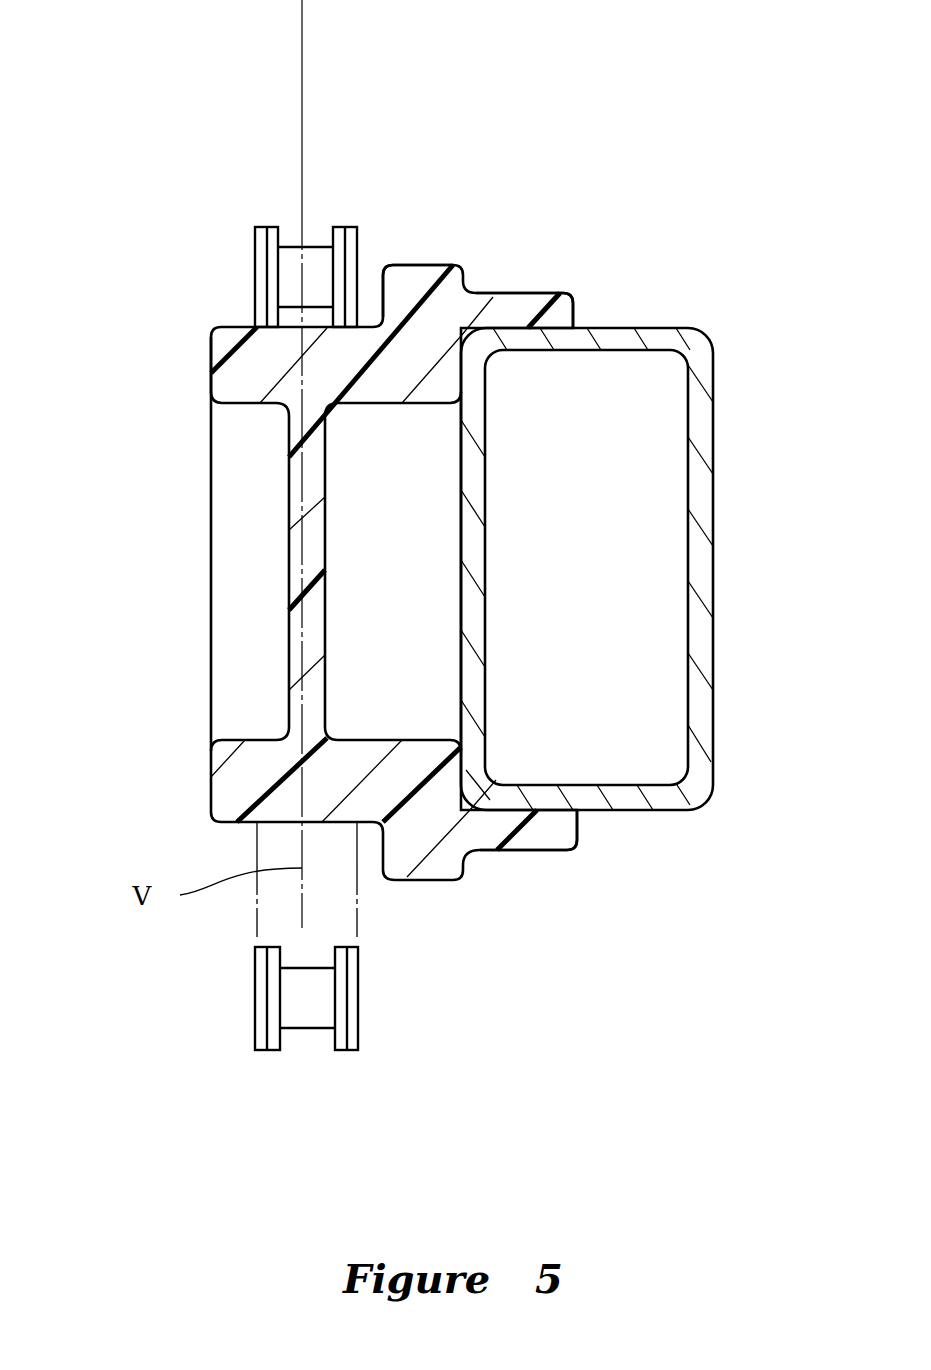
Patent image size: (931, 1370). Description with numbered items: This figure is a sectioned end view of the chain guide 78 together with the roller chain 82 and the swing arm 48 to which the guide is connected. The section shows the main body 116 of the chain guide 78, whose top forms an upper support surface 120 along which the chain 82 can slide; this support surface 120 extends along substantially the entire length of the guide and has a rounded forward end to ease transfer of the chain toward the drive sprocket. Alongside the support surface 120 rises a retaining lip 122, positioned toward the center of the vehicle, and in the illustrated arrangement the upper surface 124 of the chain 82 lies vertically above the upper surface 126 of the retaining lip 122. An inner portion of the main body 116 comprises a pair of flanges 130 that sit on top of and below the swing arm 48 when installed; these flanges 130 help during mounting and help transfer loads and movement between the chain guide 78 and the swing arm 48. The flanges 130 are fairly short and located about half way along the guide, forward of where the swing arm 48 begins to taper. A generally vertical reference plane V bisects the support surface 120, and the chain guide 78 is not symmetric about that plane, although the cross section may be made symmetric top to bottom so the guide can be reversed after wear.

The swing arm 48 is at (714, 547).
The chain guide 78 is at (207, 363).
The roller chain 82 is at (292, 250).
The main body 116 is at (160, 587).
The upper support surface 120 is at (233, 327).
The retaining lip 122 is at (483, 252).
The upper surface of the chain 124 is at (340, 227).
The upper surface of the retaining lip 126 is at (418, 265).
The flanges 130 is at (535, 293).